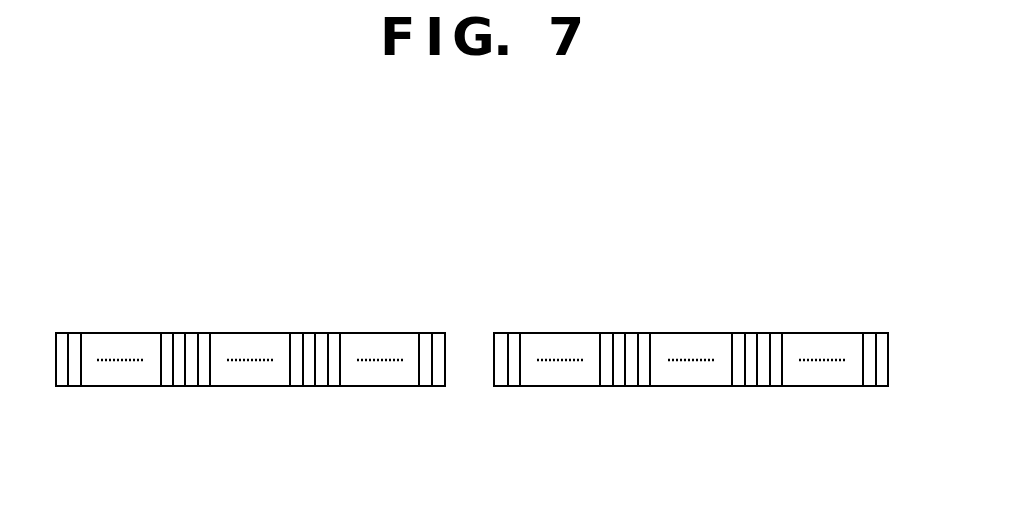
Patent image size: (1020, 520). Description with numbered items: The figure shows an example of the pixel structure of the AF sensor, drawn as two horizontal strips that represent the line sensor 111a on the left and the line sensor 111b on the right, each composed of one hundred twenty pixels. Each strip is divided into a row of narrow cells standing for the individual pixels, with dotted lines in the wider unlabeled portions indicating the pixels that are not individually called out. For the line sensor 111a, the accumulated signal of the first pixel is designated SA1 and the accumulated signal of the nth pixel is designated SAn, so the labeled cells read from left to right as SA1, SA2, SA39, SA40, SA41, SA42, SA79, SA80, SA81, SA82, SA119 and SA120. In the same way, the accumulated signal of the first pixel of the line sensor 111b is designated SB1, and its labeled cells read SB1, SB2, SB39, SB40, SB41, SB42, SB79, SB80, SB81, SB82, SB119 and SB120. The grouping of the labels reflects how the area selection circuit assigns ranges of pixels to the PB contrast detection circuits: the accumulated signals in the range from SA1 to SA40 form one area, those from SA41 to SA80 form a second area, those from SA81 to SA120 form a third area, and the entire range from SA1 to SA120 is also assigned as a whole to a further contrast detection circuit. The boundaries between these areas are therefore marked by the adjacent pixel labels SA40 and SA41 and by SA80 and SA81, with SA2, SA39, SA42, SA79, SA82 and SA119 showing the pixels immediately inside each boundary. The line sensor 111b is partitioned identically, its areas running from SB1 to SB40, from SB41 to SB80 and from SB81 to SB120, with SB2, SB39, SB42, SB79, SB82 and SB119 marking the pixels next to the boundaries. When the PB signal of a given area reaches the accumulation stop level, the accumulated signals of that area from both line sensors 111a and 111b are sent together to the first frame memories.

The line sensor 111a is at (238, 200).
The line sensor 111b is at (678, 200).
The accumulated signal of first pixel of line sensor 111a SA1 is at (62, 333).
The accumulated signal of second pixel of line sensor 111a SA2 is at (74, 333).
The accumulated signal of thirty-ninth pixel of line sensor 111a SA39 is at (167, 333).
The accumulated signal of fortieth pixel of line sensor 111a SA40 is at (179, 333).
The accumulated signal of forty-first pixel of line sensor 111a SA41 is at (191, 386).
The accumulated signal of forty-second pixel of line sensor 111a SA42 is at (204, 386).
The accumulated signal of seventy-ninth pixel of line sensor 111a SA79 is at (296, 386).
The accumulated signal of eightieth pixel of line sensor 111a SA80 is at (309, 386).
The accumulated signal of eighty-first pixel of line sensor 111a SA81 is at (321, 333).
The accumulated signal of eighty-second pixel of line sensor 111a SA82 is at (334, 333).
The accumulated signal of one-hundred-nineteenth pixel of line sensor 111a SA119 is at (425, 333).
The accumulated signal of one-hundred-twentieth pixel of line sensor 111a SA120 is at (438, 333).
The accumulated signal of first pixel of line sensor 111b SB1 is at (501, 333).
The accumulated signal of second pixel of line sensor 111b SB2 is at (514, 333).
The accumulated signal of thirty-ninth pixel of line sensor 111b SB39 is at (607, 333).
The accumulated signal of fortieth pixel of line sensor 111b SB40 is at (619, 333).
The accumulated signal of forty-first pixel of line sensor 111b SB41 is at (632, 386).
The accumulated signal of forty-second pixel of line sensor 111b SB42 is at (644, 386).
The accumulated signal of seventy-ninth pixel of line sensor 111b SB79 is at (738, 386).
The accumulated signal of eightieth pixel of line sensor 111b SB80 is at (751, 386).
The accumulated signal of eighty-first pixel of line sensor 111b SB81 is at (763, 333).
The accumulated signal of eighty-second pixel of line sensor 111b SB82 is at (776, 333).
The accumulated signal of one-hundred-nineteenth pixel of line sensor 111b SB119 is at (869, 333).
The accumulated signal of one-hundred-twentieth pixel of line sensor 111b SB120 is at (882, 333).